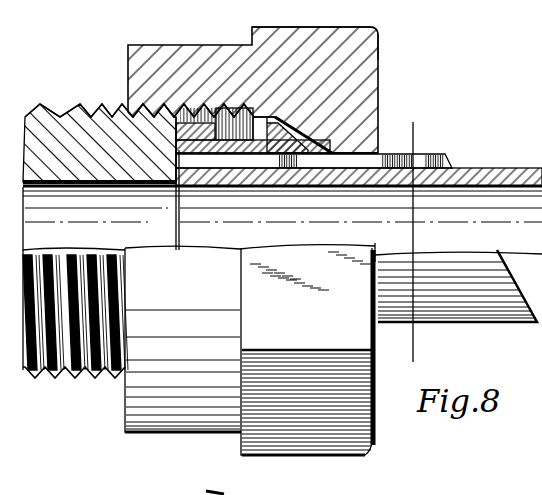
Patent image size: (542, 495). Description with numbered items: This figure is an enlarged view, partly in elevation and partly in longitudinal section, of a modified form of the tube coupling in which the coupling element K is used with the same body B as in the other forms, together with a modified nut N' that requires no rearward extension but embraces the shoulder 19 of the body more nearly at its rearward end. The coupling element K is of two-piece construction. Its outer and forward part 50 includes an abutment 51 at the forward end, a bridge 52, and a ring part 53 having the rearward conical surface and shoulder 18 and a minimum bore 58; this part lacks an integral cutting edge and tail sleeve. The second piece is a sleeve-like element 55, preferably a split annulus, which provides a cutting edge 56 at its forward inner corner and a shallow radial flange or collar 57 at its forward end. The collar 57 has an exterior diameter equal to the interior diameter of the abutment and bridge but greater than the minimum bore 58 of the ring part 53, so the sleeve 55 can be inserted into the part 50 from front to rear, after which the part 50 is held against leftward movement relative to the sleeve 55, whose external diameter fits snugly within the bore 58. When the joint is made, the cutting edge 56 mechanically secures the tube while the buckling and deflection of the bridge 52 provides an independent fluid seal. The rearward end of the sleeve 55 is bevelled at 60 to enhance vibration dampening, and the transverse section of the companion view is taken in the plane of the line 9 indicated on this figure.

The body B is at (82, 137).
The abutment 51 is at (175, 137).
The coupling element K is at (290, 128).
The ring part 53 is at (300, 112).
The nut N' is at (273, 257).
The conical surface and shoulder 18 is at (290, 170).
The shoulder 19 is at (275, 178).
The minimum bore 58 is at (285, 152).
The section line 9- 9 is at (413, 350).
The sleeve-like element 55 is at (440, 157).
The bridge 52 is at (224, 152).
The outer and forward part 50 is at (191, 150).
The cutting edge 56 is at (271, 162).
The radial flange or collar 57 is at (282, 160).
The bevel 60 is at (508, 287).